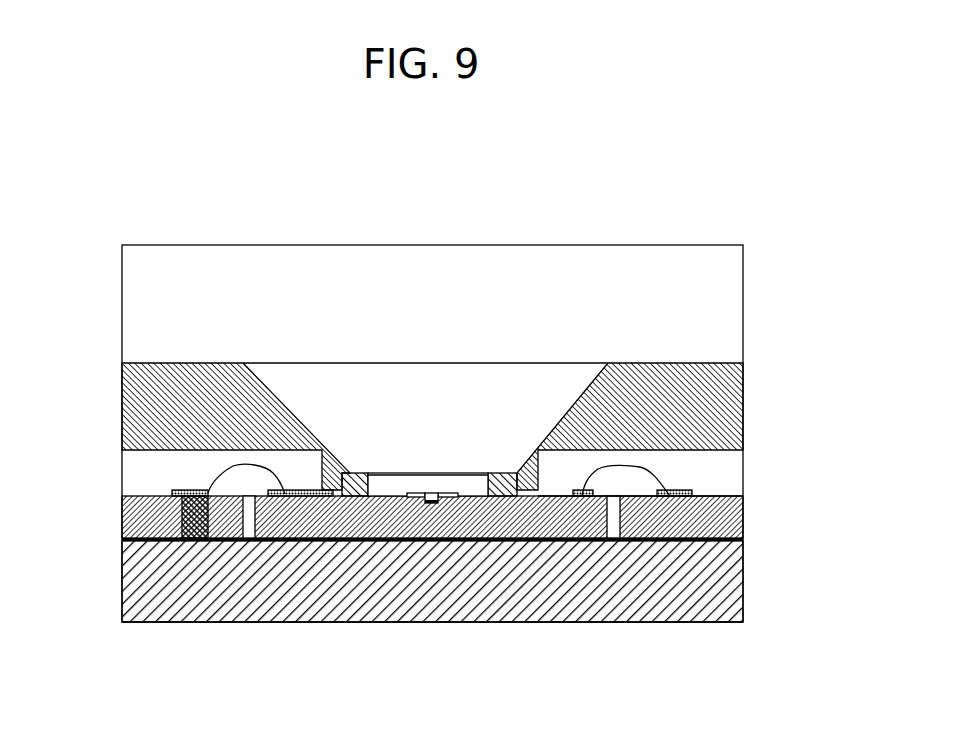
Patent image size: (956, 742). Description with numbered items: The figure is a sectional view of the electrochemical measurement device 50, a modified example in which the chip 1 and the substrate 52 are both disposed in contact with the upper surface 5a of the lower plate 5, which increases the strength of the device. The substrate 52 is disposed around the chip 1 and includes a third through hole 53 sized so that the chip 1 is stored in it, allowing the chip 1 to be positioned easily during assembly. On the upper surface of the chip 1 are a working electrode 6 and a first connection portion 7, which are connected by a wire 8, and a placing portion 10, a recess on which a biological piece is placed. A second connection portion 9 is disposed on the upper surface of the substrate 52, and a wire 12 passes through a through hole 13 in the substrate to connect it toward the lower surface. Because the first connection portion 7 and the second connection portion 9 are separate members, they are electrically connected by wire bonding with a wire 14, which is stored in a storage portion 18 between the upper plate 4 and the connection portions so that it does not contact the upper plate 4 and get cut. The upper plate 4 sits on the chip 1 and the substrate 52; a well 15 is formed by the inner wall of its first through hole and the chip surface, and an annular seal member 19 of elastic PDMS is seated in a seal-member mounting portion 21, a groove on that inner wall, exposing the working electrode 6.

The electrochemical measurement device 50 is at (710, 203).
The upper plate 4 is at (728, 392).
The well 15 is at (467, 382).
The seal-member mounting portion 21 is at (341, 473).
The seal member 19 is at (362, 474).
The working electrode 6 is at (397, 490).
The second connection portion 9 is at (177, 492).
The wire 14 is at (640, 467).
The storage portion 18 is at (720, 483).
The through hole 13 is at (188, 518).
The substrate 52 is at (743, 515).
The wire 12 is at (137, 553).
The first connection portion 7 is at (271, 497).
The wire 8 is at (330, 497).
The placing portion 10 is at (432, 503).
The upper surface 5a is at (450, 497).
The chip 1 is at (518, 498).
The third through hole 53 is at (614, 522).
The lower plate 5 is at (710, 623).